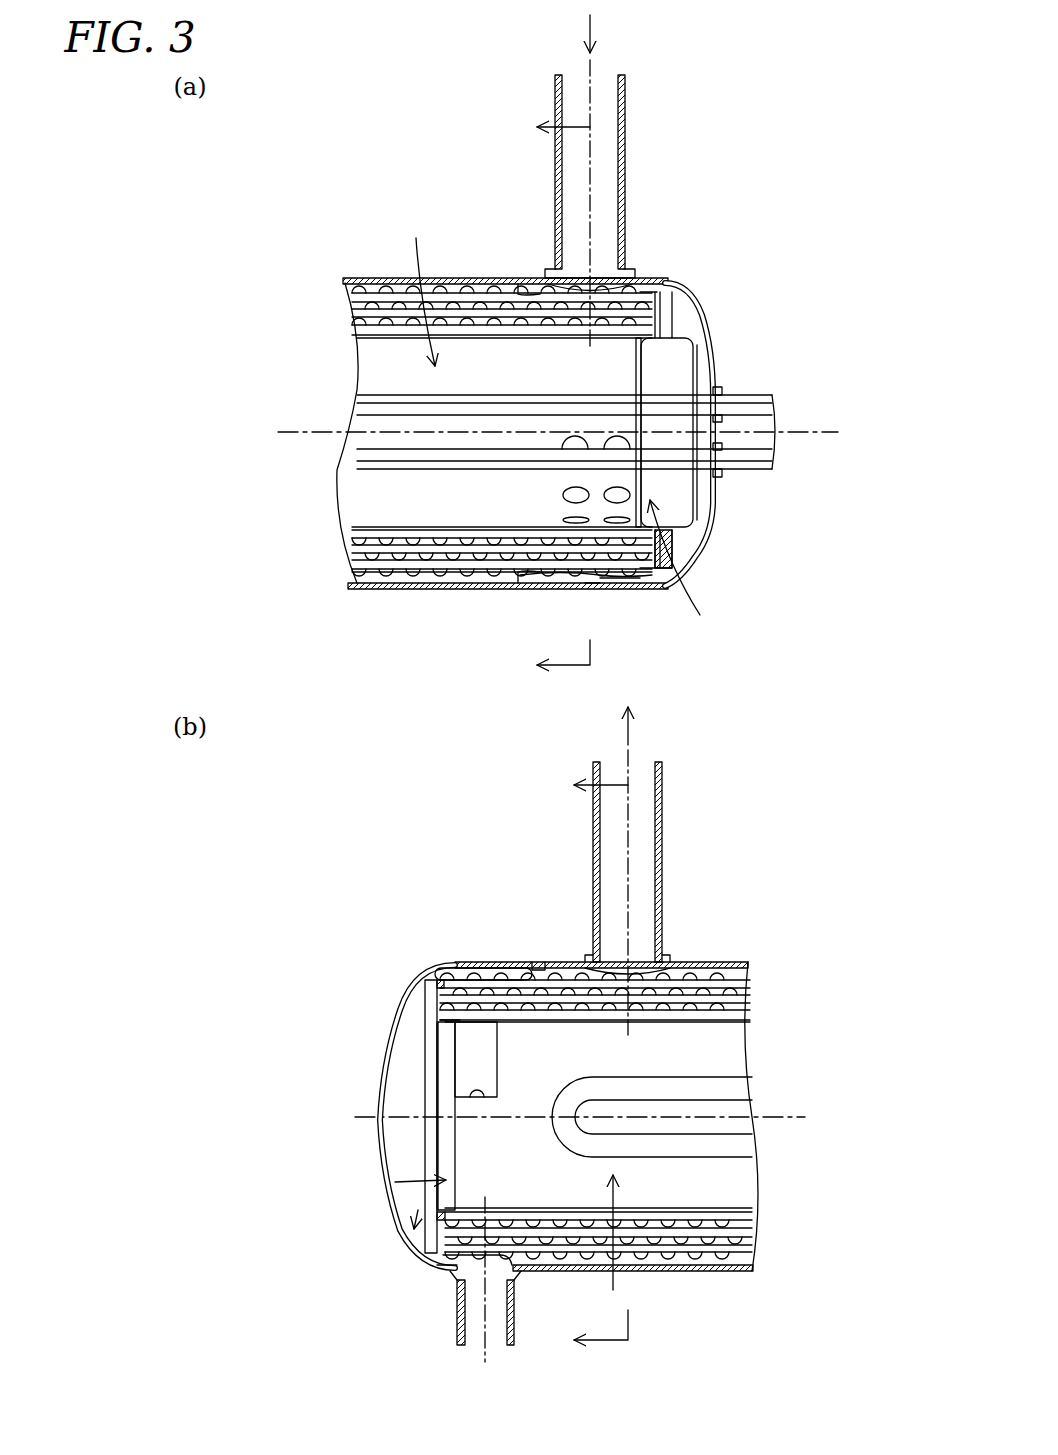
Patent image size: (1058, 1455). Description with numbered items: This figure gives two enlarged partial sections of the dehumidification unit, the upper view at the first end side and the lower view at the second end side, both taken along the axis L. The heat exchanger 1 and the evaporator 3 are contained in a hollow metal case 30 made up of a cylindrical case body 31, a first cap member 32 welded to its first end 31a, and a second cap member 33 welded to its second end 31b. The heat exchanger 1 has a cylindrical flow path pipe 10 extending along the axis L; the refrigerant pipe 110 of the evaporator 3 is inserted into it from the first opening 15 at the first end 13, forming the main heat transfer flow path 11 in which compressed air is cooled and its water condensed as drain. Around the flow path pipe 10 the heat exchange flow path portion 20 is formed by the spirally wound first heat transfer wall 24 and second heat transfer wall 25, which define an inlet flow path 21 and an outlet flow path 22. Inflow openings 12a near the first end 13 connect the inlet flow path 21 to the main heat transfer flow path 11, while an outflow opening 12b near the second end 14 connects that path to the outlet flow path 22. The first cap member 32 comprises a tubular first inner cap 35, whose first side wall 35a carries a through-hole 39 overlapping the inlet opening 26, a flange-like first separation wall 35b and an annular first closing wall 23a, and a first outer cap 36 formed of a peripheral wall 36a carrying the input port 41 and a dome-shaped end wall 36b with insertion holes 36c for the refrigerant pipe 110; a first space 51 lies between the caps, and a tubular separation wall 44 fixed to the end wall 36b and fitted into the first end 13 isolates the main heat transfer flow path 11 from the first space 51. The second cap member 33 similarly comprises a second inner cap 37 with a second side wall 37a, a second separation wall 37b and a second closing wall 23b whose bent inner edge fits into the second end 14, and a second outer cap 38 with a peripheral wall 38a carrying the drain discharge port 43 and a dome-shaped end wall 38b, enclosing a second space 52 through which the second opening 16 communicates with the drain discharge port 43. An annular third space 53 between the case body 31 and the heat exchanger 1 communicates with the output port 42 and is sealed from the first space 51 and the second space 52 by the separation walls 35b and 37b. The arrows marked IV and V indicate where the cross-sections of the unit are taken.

The heat exchanger 1 is at (362, 573).
The evaporator 3 is at (508, 764).
The flow path pipe 10 is at (375, 375).
The main heat transfer flow path 11 is at (428, 506).
The inflow openings 12a is at (562, 497).
The outflow opening 12b is at (472, 1095).
The first end 13 is at (665, 300).
The second end 14 is at (460, 1045).
The first opening 15 is at (689, 565).
The second opening 16 is at (468, 1197).
The heat exchange flow path portion 20 is at (250, 246).
The inlet flow path 21 is at (352, 328).
The outlet flow path 22 is at (352, 320).
The first closing wall 23a is at (673, 330).
The second closing wall 23b is at (437, 1093).
The first heat transfer wall 24 is at (410, 577).
The second heat transfer wall 25 is at (380, 570).
The inlet opening 26 is at (567, 565).
The case 30 is at (317, 193).
The case body 31 is at (397, 281).
The first end 31a is at (508, 270).
The second end 31b is at (530, 958).
The first cap member 32 is at (758, 180).
The second cap member 33 is at (312, 900).
The first inner cap 35 is at (645, 290).
The first side wall 35a is at (548, 288).
The first separation wall 35b is at (512, 288).
The first outer cap 36 is at (675, 280).
The peripheral wall 36a is at (600, 590).
The end wall 36b is at (716, 378).
The insertion holes 36c is at (716, 458).
The second inner cap 37 is at (433, 973).
The second side wall 37a is at (495, 980).
The second separation wall 37b is at (540, 965).
The second outer cap 38 is at (403, 982).
The peripheral wall 38a is at (473, 967).
The end wall 38b is at (400, 1232).
The through-hole 39 is at (608, 578).
The input port 41 is at (605, 108).
The output port 42 is at (638, 812).
The drain discharge port 43 is at (470, 1315).
The tubular separation wall 44 is at (680, 495).
The first space 51 is at (680, 540).
The second space 52 is at (405, 1037).
The third space 53 is at (433, 573).
The refrigerant pipe 110 is at (762, 462).
The axis L is at (568, 775).
The section line IV is at (544, 397).
The section line V is at (587, 1063).